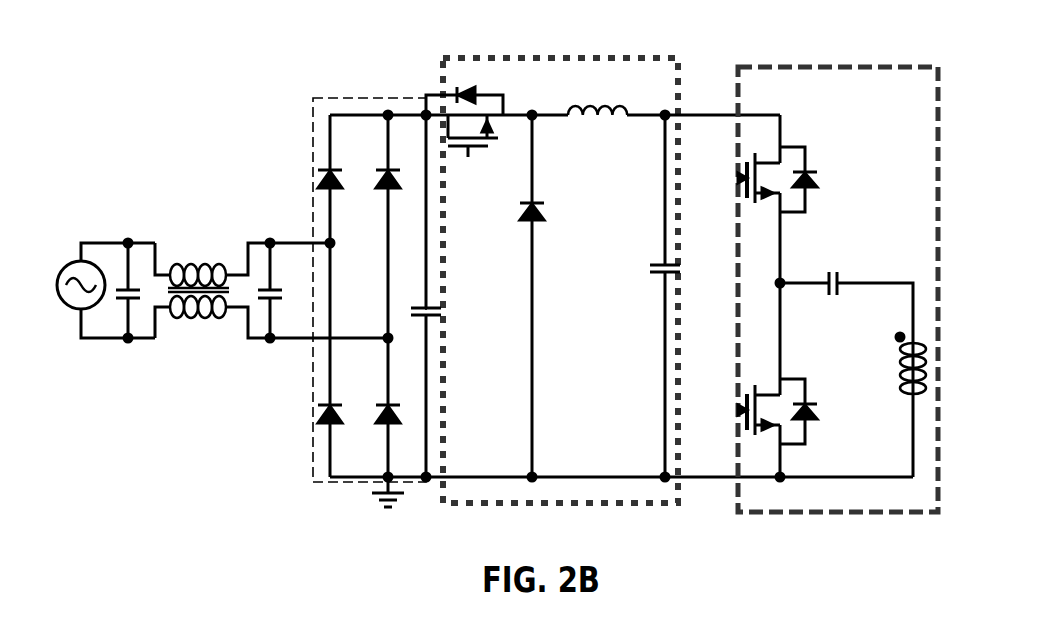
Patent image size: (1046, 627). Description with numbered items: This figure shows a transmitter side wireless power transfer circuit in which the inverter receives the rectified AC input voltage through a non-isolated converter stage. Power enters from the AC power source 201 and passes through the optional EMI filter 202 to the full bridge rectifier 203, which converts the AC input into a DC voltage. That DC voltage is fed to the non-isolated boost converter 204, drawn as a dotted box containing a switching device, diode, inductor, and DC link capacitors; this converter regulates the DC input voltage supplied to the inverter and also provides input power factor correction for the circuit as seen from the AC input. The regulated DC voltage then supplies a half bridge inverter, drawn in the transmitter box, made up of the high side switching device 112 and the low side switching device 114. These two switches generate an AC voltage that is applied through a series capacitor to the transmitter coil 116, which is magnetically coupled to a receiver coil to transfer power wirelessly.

The AC power source 201 is at (68, 254).
The EMI filter 202 is at (208, 255).
The full bridge rectifier 203 is at (313, 140).
The non-isolated boost converter 204 is at (458, 57).
The high side switching device 112 is at (800, 143).
The low side switching device 114 is at (800, 377).
The transmitter coil 116 is at (907, 390).